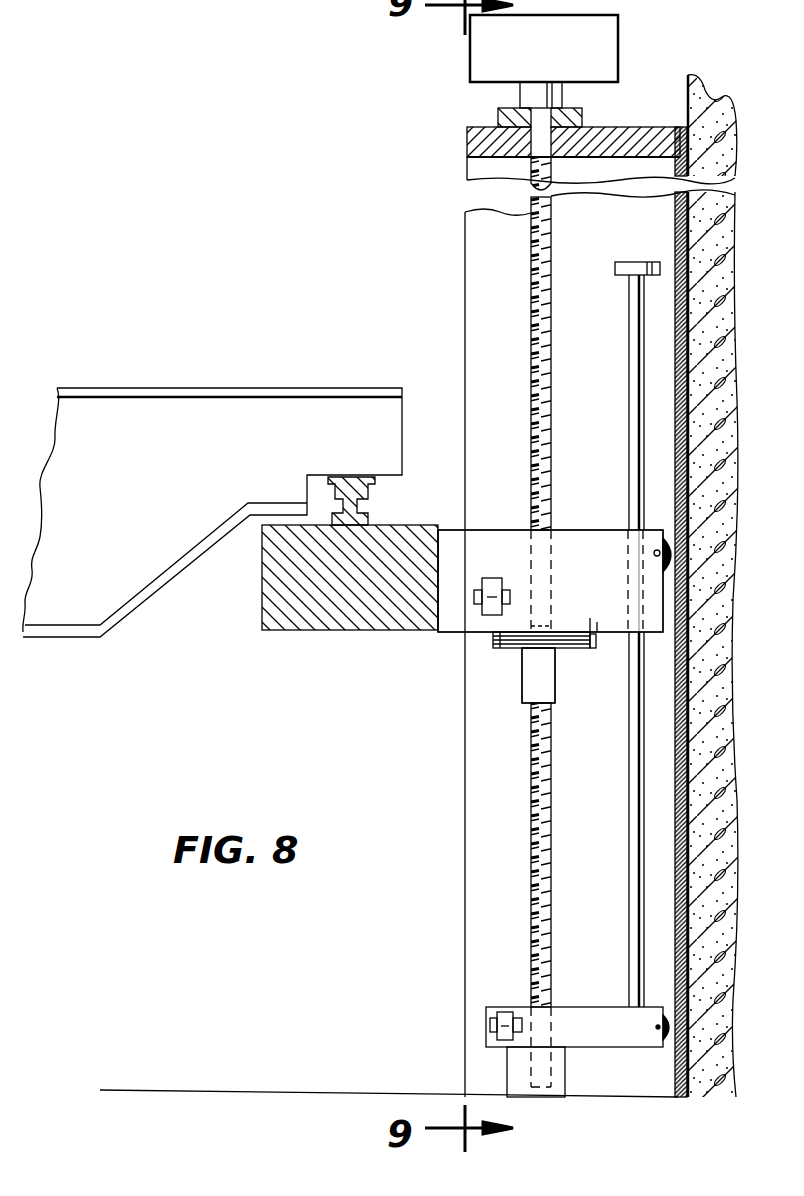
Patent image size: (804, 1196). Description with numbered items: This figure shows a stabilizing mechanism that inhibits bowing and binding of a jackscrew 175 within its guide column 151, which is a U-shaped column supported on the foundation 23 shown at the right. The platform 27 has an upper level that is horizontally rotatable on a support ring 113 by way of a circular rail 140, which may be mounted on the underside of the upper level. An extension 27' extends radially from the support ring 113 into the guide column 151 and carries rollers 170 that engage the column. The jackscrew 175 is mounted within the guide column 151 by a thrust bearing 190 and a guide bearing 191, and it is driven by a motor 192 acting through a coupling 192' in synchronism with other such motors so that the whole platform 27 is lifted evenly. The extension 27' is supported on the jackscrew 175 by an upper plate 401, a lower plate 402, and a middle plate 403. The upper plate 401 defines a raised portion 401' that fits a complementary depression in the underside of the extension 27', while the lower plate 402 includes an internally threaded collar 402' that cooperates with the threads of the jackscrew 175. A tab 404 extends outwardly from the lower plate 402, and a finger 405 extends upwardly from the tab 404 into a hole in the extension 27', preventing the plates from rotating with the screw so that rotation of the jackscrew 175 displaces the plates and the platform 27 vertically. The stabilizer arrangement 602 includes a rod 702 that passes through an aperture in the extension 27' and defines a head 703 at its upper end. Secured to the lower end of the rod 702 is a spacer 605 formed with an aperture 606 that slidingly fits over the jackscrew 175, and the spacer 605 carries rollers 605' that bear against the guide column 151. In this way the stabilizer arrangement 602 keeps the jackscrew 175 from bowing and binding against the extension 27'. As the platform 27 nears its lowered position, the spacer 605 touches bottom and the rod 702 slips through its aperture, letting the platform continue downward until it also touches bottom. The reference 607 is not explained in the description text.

The foundation 23 is at (712, 110).
The platform 27 is at (212, 476).
The extension 27' is at (550, 581).
The support ring 113 is at (262, 602).
The circular rail 140 is at (362, 508).
The guide column 151 is at (675, 413).
The rollers 170 is at (486, 578).
The jackscrew 175 is at (553, 243).
The thrust bearing 190 is at (497, 122).
The guide bearing 191 is at (565, 1082).
The motor 192 is at (498, 48).
The coupling 192' is at (578, 96).
The upper plate 401 is at (487, 644).
The raised portion 401' is at (571, 598).
The lower plate 402 is at (487, 672).
The internally threaded collar 402' is at (512, 680).
The middle plate 403 is at (495, 640).
The tab 404 is at (594, 650).
The finger 405 is at (612, 609).
The stabilizer arrangement 602 is at (598, 749).
The spacer 605 is at (522, 1046).
The rollers 605' is at (495, 998).
The aperture 606 is at (552, 1032).
The upper housing 607 is at (602, 564).
The rod 702 is at (628, 368).
The head 703 is at (641, 262).